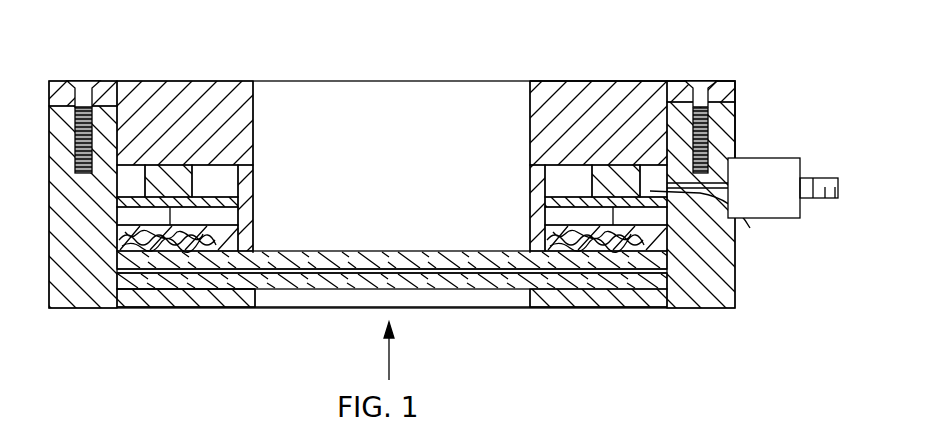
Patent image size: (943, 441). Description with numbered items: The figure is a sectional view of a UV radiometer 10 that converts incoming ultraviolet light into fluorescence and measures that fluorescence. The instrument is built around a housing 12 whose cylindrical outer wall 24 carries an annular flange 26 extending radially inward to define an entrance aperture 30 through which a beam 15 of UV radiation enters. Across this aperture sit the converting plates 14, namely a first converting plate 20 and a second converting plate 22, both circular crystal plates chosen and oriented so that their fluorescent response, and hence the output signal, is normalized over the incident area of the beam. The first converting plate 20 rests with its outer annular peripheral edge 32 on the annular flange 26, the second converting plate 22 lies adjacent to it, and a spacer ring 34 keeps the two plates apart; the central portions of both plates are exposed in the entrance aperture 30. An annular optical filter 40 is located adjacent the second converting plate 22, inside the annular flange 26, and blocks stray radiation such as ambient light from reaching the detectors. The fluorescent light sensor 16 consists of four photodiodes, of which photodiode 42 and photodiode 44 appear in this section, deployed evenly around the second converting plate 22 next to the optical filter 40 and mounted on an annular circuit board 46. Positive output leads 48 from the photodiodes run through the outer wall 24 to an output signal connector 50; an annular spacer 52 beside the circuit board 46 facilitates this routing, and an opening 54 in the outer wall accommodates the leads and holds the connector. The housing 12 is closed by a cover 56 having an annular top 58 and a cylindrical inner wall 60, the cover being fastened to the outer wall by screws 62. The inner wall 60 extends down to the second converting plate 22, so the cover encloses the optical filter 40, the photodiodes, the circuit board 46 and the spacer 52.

The UV radiometer 10 is at (160, 36).
The housing 12 is at (737, 282).
The UV radiation-to-fluorescent emission converting plates 14 is at (287, 306).
The beam of UV radiation 15 is at (387, 352).
The fluorescent light sensor 16 is at (526, 200).
The first converting plate 20 is at (453, 289).
The second converting plate 22 is at (298, 252).
The cylindrical outer wall 24 is at (48, 266).
The annular flange 26 is at (186, 283).
The entrance aperture 30 is at (502, 300).
The outer annular peripheral edge 32 is at (665, 305).
The spacer ring 34 is at (138, 268).
The annular optical filter 40 is at (130, 243).
The photodiode 42 is at (662, 215).
The photodiode 44 is at (118, 212).
The annular circuit board 46 is at (222, 185).
The positive output leads 48 is at (715, 222).
The output signal connector 50 is at (767, 158).
The annular spacer 52 is at (160, 164).
The opening 54 is at (735, 186).
The cover 56 is at (755, 76).
The annular top 58 is at (595, 80).
The cylindrical inner wall 60 is at (255, 176).
The screws 62 is at (82, 80).